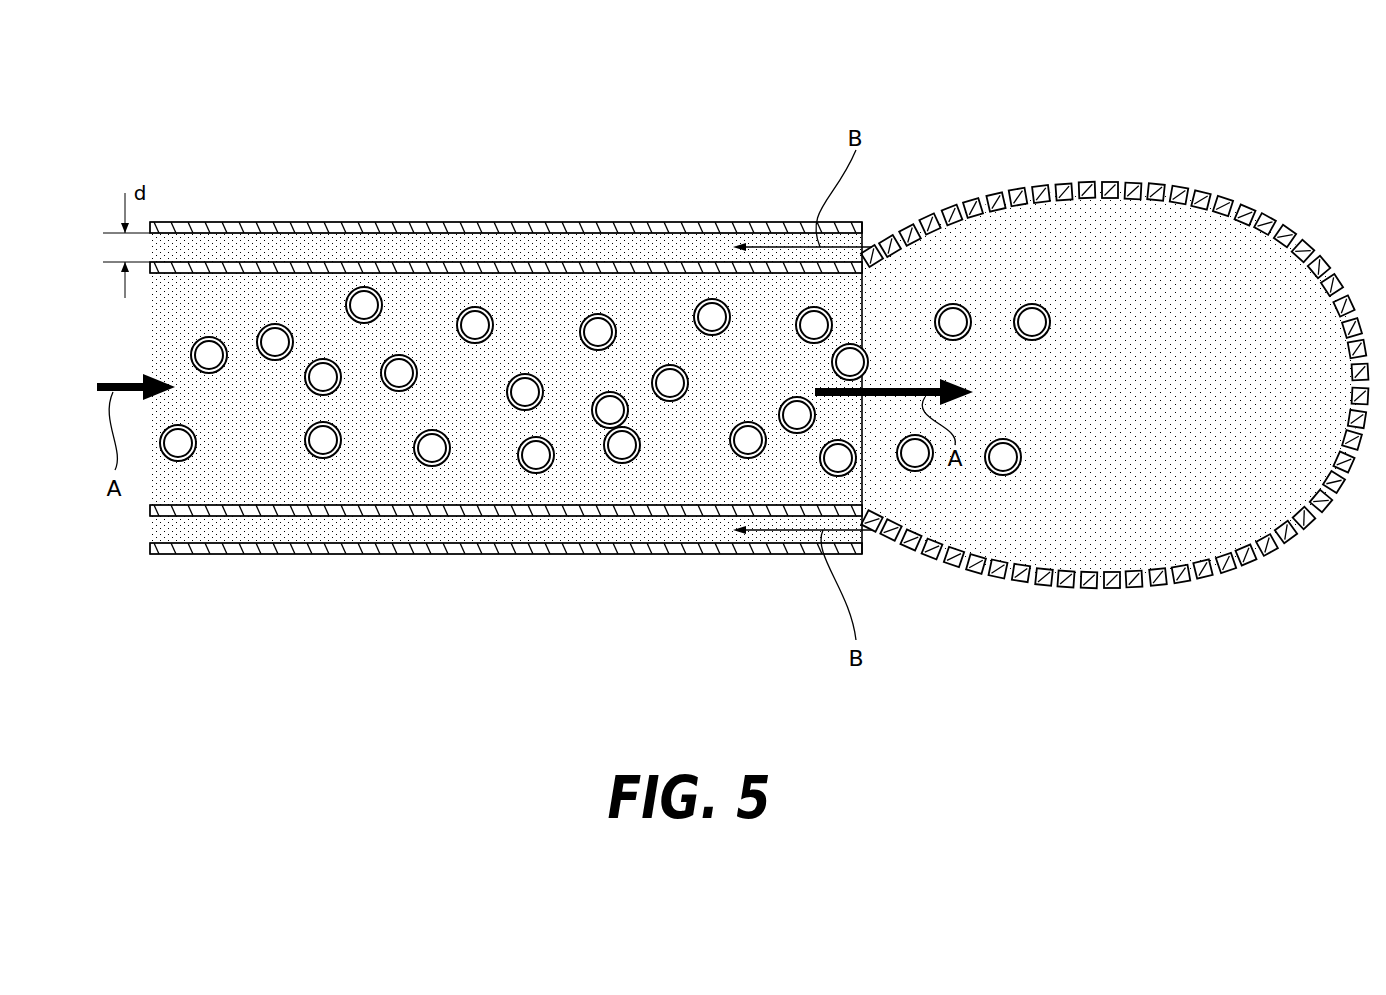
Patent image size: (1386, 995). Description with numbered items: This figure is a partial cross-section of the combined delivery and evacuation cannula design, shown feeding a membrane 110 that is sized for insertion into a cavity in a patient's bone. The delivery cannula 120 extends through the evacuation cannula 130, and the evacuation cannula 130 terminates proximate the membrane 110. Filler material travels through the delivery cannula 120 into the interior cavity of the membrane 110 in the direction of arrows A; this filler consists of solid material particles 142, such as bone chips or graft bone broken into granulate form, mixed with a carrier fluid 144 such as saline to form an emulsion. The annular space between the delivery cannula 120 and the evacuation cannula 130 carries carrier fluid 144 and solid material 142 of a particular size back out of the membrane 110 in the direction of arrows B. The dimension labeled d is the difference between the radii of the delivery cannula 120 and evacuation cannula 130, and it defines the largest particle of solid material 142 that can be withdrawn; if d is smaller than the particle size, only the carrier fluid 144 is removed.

The membrane 110 is at (1097, 182).
The delivery cannula 120 is at (442, 512).
The evacuation cannula 130 is at (650, 552).
The solid material particles 142 is at (360, 287).
The carrier fluid 144 is at (566, 302).